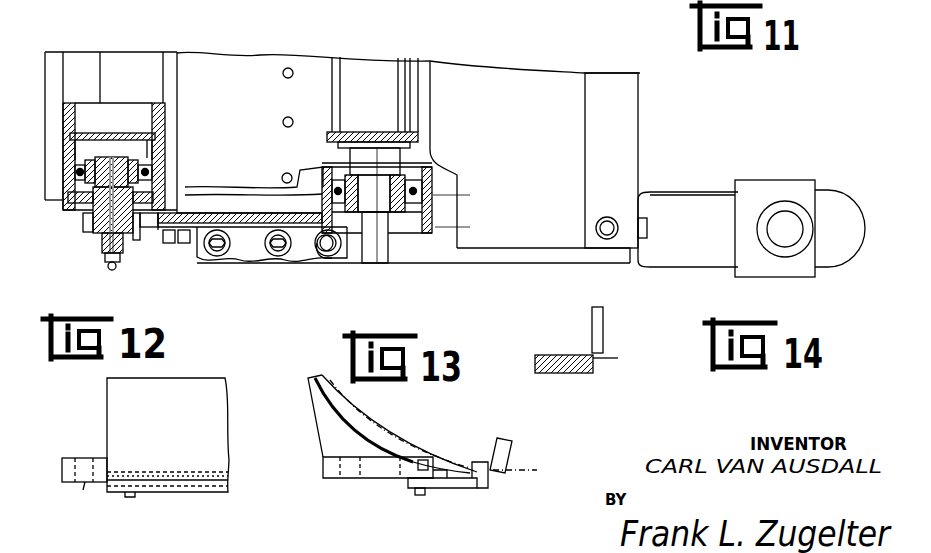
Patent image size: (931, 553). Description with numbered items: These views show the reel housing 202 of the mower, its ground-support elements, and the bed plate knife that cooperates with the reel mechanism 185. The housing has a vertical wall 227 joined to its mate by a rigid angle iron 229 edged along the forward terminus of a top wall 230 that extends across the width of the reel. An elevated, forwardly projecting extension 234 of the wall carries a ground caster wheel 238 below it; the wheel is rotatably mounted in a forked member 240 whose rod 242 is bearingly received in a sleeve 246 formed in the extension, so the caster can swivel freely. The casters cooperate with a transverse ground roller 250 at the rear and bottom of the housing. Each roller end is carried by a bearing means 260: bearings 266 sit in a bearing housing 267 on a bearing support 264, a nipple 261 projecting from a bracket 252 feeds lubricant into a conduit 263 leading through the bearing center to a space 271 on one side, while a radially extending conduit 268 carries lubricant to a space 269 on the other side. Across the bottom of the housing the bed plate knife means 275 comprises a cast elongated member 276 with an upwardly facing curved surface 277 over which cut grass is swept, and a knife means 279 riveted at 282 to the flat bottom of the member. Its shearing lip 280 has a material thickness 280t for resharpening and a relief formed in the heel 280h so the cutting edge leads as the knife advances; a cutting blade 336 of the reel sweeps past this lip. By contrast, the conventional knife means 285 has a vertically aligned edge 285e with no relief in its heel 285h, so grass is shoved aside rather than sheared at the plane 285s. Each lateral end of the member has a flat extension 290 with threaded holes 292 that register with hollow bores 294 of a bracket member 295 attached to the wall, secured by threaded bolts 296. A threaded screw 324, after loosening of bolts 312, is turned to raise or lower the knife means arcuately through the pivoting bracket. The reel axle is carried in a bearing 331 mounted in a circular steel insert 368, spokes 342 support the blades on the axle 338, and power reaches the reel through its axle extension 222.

In FIG. 13, the reel mechanism 185 is at (522, 456).
In FIG. 11, the reel housing 202 is at (470, 284).
In FIG. 11, the reel axle extension 222 is at (390, 252).
In FIG. 11, the vertical wall 227 is at (300, 210).
In FIG. 11, the rigid angle iron 229 is at (630, 136).
In FIG. 11, the top wall 230 is at (552, 78).
In FIG. 11, the forwardly projecting extension 234 is at (690, 200).
In FIG. 11, the ground caster wheel 238 is at (838, 200).
In FIG. 11, the forked member 240 is at (796, 180).
In FIG. 11, the rod 242 is at (770, 232).
In FIG. 11, the sleeve 246 is at (758, 222).
In FIG. 11, the ground roller 250 is at (60, 205).
In FIG. 11, the bracket 252 is at (150, 227).
In FIG. 11, the bearing means 260 is at (82, 268).
In FIG. 11, the nipple 261 is at (112, 270).
In FIG. 11, the conduit 263 is at (102, 245).
In FIG. 11, the bearing support 264 is at (83, 238).
In FIG. 11, the bearings 266 is at (140, 170).
In FIG. 11, the bearing housing 267 is at (130, 133).
In FIG. 11, the radially extending conduit 268 is at (113, 151).
In FIG. 11, the space 269 is at (150, 180).
In FIG. 11, the space 271 is at (150, 145).
In FIG. 13, the bed plate knife means 275 is at (393, 507).
In FIG. 13, the elongated member 276 is at (310, 438).
In FIG. 11, the curved surface 277 is at (266, 70).
In FIG. 12, the curved surface 277 is at (189, 435).
In FIG. 13, the curved surface 277 is at (396, 424).
In FIG. 11, the knife means 279 is at (312, 258).
In FIG. 12, the knife means 279 is at (183, 488).
In FIG. 13, the knife means 279 is at (455, 488).
In FIG. 12, the shearing lip 280 is at (185, 472).
In FIG. 13, the shearing lip 280 is at (488, 476).
In FIG. 13, the material thickness 280t is at (472, 462).
In FIG. 13, the hook heel 280h is at (488, 482).
In FIG. 12, the rivet 282 is at (128, 497).
In FIG. 13, the rivet 282 is at (420, 495).
In FIG. 14, the conventional bed plate knife means 285 is at (546, 388).
In FIG. 14, the plane of shearing 285s is at (603, 353).
In FIG. 14, the vertically aligned edge 285e is at (618, 358).
In FIG. 14, the heel 285h is at (592, 375).
In FIG. 11, the flat extension 290 is at (240, 258).
In FIG. 12, the flat extension 290 is at (97, 460).
In FIG. 13, the flat extension 290 is at (330, 478).
In FIG. 12, the threaded holes 292 is at (84, 497).
In FIG. 13, the threaded holes 292 is at (350, 478).
In FIG. 11, the hollow bores 294 is at (238, 258).
In FIG. 11, the bracket member 295 is at (253, 218).
In FIG. 11, the threaded bolt 296 is at (215, 258).
In FIG. 11, the bolts 312 is at (170, 243).
In FIG. 11, the threaded screw 324 is at (340, 258).
In FIG. 11, the bearing 331 is at (433, 195).
In FIG. 13, the cutting blade 336 is at (537, 470).
In FIG. 11, the axle 338 is at (402, 112).
In FIG. 11, the spokes 342 is at (420, 137).
In FIG. 11, the circular steel insert 368 is at (435, 227).